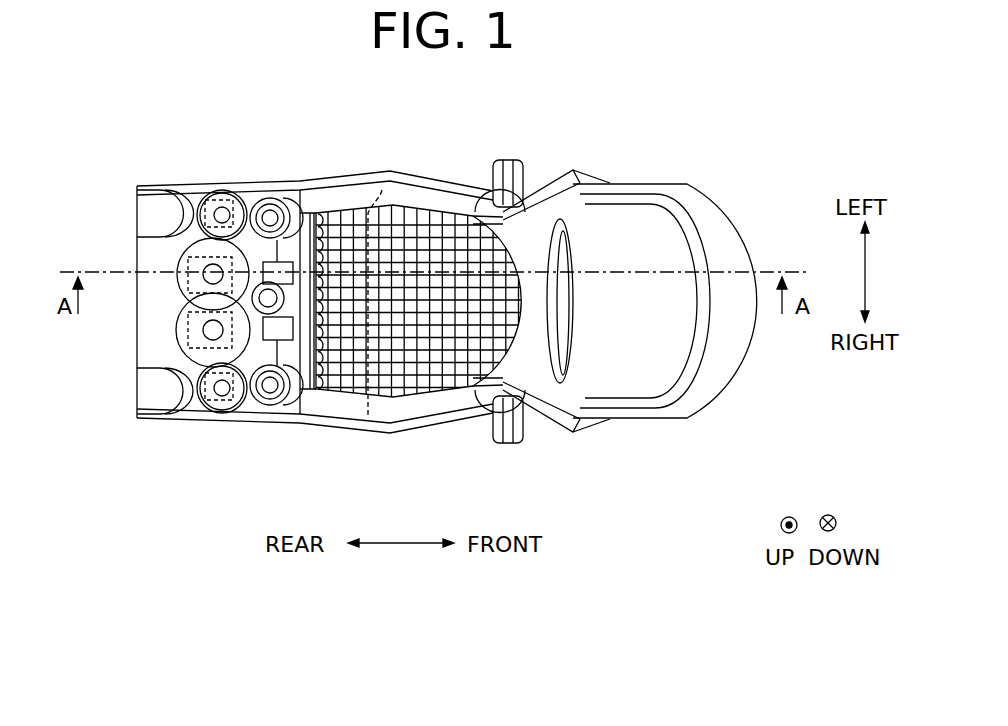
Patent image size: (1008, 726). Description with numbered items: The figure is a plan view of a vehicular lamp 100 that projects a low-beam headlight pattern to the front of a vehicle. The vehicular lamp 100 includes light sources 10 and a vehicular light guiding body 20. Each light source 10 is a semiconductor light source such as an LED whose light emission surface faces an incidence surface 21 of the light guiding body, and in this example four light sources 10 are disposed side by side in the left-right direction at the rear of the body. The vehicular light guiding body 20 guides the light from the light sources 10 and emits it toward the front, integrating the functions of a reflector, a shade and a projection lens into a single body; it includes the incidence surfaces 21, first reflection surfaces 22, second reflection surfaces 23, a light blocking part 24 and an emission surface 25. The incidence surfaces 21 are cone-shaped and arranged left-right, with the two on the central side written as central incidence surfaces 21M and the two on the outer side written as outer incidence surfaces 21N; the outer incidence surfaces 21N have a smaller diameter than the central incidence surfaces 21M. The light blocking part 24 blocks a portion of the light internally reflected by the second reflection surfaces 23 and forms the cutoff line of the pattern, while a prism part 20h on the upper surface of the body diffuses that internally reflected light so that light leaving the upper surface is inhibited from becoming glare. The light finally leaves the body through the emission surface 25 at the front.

The vehicular lamp 100 is at (736, 141).
The light source 10 is at (220, 190).
The vehicular light guiding body 20 is at (363, 444).
The prism part 20h is at (447, 360).
The incidence surface 21 is at (159, 283).
The outer incidence surface 21N is at (222, 208).
The central incidence surface 21M is at (200, 325).
The first reflection surface 22 is at (240, 193).
The second reflection surface 23 is at (137, 381).
The light blocking part 24 is at (382, 190).
The emission surface 25 is at (735, 386).